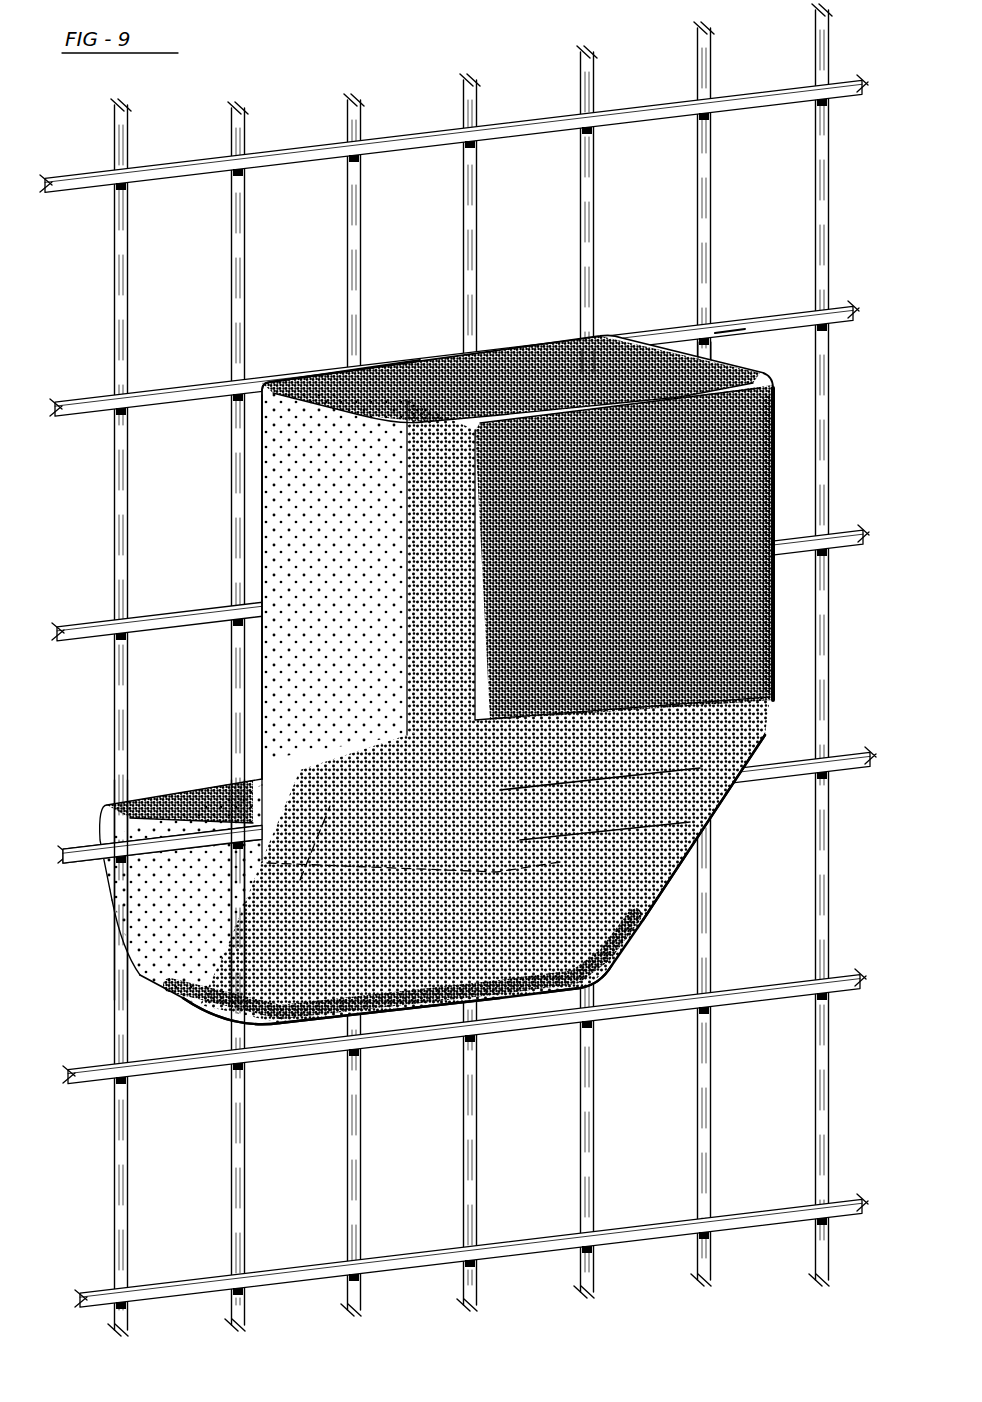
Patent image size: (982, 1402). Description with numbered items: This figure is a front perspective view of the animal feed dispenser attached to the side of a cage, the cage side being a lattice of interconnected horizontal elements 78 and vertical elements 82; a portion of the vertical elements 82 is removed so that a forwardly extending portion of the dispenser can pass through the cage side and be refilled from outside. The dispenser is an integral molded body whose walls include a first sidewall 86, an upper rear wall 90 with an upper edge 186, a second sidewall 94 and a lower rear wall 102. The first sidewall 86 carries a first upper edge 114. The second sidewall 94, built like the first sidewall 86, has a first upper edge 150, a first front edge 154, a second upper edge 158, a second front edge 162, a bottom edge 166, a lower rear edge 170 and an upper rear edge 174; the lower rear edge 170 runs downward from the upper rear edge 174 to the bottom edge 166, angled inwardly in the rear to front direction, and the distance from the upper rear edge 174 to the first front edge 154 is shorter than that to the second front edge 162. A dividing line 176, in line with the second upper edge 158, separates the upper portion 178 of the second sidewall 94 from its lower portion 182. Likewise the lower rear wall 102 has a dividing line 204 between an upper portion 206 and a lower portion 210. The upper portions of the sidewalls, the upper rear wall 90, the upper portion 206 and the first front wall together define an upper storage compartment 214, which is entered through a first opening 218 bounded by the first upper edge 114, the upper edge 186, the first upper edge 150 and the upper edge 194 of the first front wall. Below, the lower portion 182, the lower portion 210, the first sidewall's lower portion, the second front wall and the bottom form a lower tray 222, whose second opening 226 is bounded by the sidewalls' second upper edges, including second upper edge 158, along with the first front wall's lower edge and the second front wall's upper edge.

The horizontal elements 78 is at (773, 110).
The vertical elements 82 is at (470, 100).
The first sidewall 86 is at (778, 592).
The upper rear wall 90 is at (648, 600).
The second sidewall 94 is at (358, 687).
The lower rear wall 102 is at (545, 880).
The first upper edge 114 is at (727, 335).
The first upper edge 150 is at (353, 400).
The first front edge 154 is at (265, 555).
The second upper edge 158 is at (178, 826).
The second front edge 162 is at (128, 912).
The bottom edge 166 is at (165, 1000).
The lower rear edge 170 is at (290, 960).
The upper rear edge 174 is at (418, 600).
The dividing line 176 is at (298, 910).
The upper portion 178 is at (360, 569).
The lower portion 182 is at (218, 919).
The upper edge 186 is at (598, 410).
The upper edge 194 is at (308, 365).
The dividing line 204 is at (392, 1025).
The upper portion 206 is at (618, 795).
The lower portion 210 is at (592, 962).
The upper storage compartment 214 is at (305, 492).
The first opening 218 is at (490, 378).
The lower tray 222 is at (160, 870).
The second upper edge... 226 is at (215, 790).